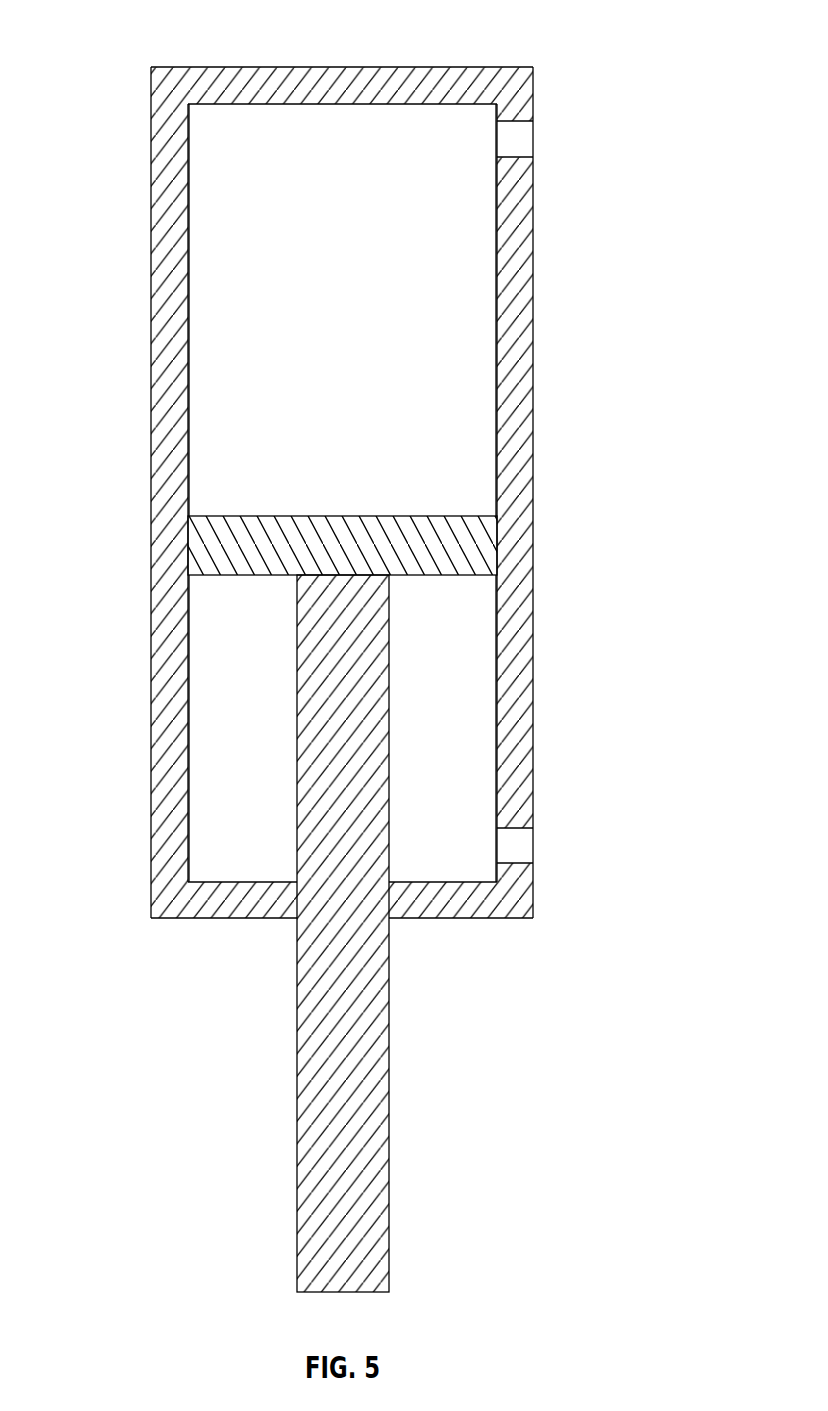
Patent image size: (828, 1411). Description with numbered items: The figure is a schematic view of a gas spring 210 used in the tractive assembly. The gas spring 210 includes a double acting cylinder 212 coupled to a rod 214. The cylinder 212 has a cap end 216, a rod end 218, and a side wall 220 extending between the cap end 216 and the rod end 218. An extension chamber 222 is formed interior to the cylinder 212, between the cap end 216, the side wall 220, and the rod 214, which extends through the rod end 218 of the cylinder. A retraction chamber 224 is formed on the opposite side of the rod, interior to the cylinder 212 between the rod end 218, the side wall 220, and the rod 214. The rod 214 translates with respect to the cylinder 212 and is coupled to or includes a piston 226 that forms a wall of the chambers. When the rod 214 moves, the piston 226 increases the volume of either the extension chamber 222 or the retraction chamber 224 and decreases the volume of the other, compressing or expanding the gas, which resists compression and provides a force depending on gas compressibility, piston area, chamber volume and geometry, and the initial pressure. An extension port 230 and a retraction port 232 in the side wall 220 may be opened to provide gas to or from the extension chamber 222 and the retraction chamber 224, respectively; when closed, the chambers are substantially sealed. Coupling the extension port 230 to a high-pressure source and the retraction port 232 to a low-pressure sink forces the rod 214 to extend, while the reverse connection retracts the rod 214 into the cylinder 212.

The gas spring 210 is at (606, 40).
The double acting cylinder 212 is at (160, 363).
The rod 214 is at (380, 1045).
The cap end 216 is at (146, 101).
The rod end 218 is at (146, 891).
The side wall 220 is at (146, 531).
The extension chamber 222 is at (448, 288).
The retraction chamber 224 is at (462, 706).
The piston 226 is at (481, 551).
The extension port 230 is at (522, 142).
The retraction port 232 is at (522, 851).